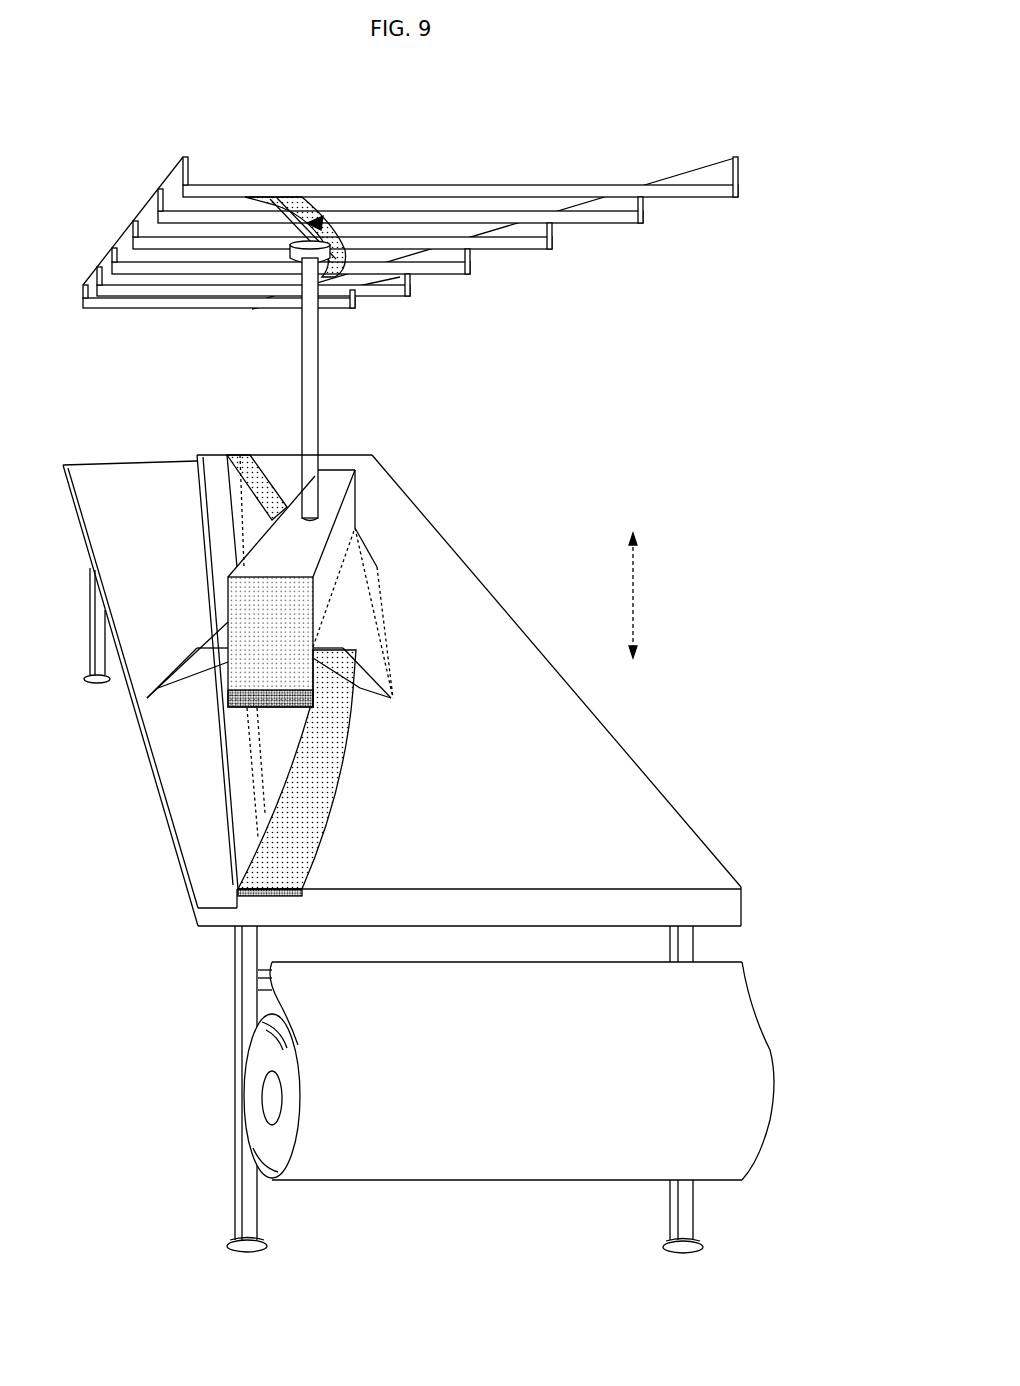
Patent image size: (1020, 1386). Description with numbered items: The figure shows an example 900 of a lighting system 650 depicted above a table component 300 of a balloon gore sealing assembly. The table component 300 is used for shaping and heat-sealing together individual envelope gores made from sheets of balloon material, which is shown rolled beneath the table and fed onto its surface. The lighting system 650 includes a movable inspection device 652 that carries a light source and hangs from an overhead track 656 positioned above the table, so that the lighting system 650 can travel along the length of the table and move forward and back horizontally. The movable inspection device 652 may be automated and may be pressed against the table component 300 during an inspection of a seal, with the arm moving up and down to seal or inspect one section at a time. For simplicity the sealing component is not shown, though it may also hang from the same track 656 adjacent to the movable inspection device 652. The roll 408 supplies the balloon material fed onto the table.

The example 900 is at (780, 39).
The lighting system 650 is at (592, 110).
The track 656 is at (330, 228).
The movable inspection device 652 is at (382, 557).
The table component 300 is at (670, 783).
The material roll 408 is at (471, 1098).